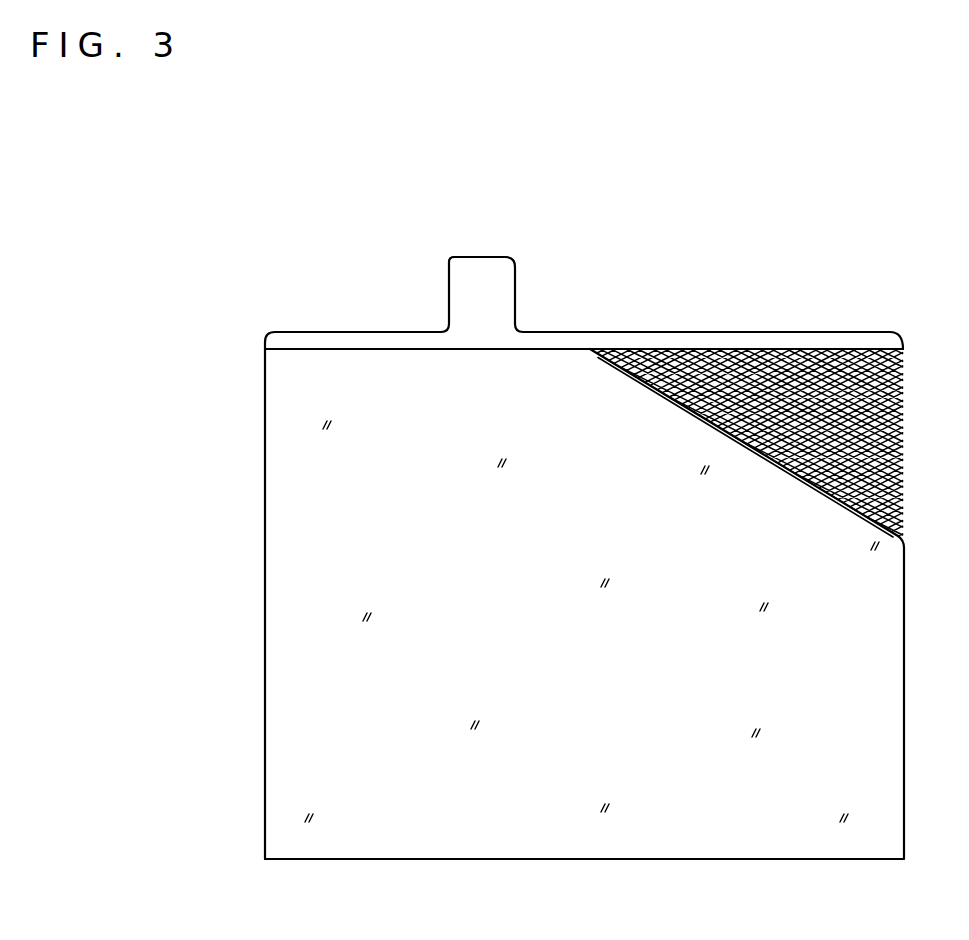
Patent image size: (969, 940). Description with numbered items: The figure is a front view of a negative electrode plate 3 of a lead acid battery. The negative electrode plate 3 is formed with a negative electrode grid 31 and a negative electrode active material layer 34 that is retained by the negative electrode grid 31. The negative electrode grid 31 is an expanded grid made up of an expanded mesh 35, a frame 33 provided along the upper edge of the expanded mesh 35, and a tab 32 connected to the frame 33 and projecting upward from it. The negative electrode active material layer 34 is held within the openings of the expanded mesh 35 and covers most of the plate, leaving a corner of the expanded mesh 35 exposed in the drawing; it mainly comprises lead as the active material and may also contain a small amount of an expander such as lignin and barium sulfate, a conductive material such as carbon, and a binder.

The negative electrode plate 3 is at (706, 312).
The negative electrode grid 31 is at (817, 342).
The tab 32 is at (482, 278).
The frame 33 is at (600, 335).
The negative electrode active material layer 34 is at (697, 832).
The expanded mesh 35 is at (642, 355).